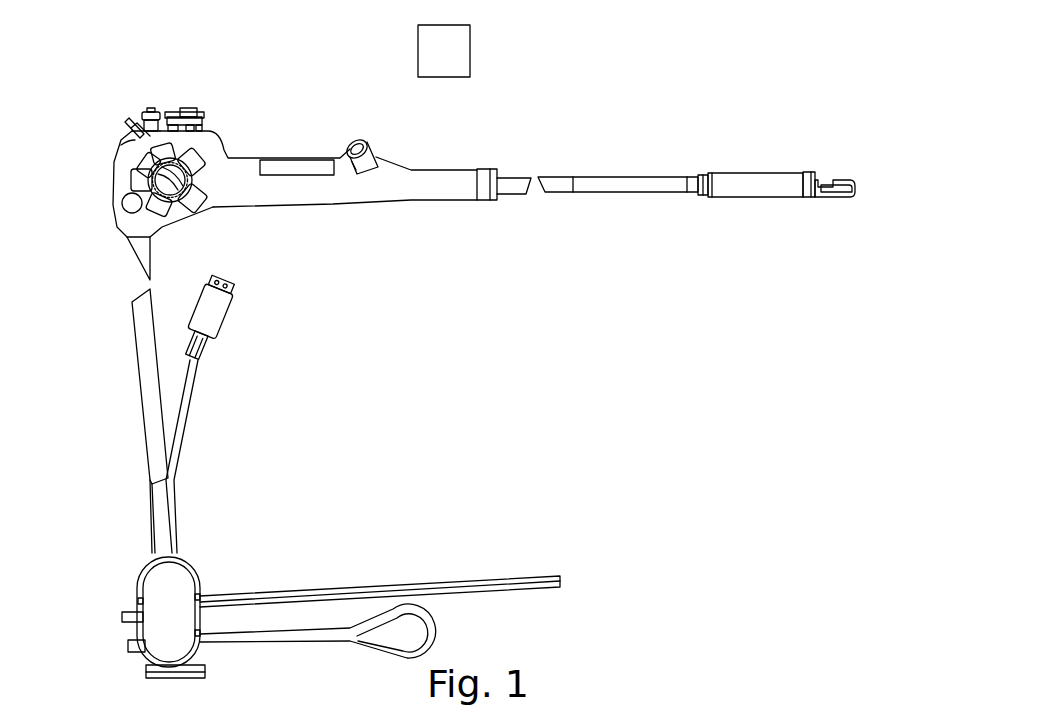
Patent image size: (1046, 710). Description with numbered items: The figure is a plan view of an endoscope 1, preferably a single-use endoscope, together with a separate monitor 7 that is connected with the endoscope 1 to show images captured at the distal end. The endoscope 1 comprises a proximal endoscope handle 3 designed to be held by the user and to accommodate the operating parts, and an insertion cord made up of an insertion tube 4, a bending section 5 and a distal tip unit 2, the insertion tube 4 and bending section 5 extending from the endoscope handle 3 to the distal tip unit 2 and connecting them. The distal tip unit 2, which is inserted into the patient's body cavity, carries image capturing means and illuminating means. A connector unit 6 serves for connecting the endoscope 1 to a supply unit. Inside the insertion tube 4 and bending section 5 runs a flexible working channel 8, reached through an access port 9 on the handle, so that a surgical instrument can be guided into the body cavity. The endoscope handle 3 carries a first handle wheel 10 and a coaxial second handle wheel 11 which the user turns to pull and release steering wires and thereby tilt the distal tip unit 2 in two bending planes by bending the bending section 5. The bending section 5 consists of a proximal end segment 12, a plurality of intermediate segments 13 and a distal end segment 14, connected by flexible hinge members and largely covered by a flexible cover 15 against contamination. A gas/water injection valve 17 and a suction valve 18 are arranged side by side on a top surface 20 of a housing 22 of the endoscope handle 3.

The endoscope 1 is at (465, 150).
The distal tip unit 2 is at (853, 187).
The endoscope handle 3 is at (293, 108).
The insertion tube 4 is at (625, 155).
The bending section 5 is at (761, 224).
The connector unit 6 is at (242, 441).
The monitor 7 is at (444, 51).
The working channel 8 is at (588, 182).
The access port 9 is at (365, 146).
The first handle wheel 10 is at (182, 152).
The second handle wheel 11 is at (147, 133).
The proximal end segment 12 is at (703, 178).
The intermediate segments 13 is at (770, 183).
The distal end segment 14 is at (813, 177).
The flexible cover 15 is at (732, 175).
The gas/water injection valve 17 is at (200, 108).
The suction valve 18 is at (153, 107).
The top surface 20 is at (205, 125).
The housing 22 is at (303, 187).